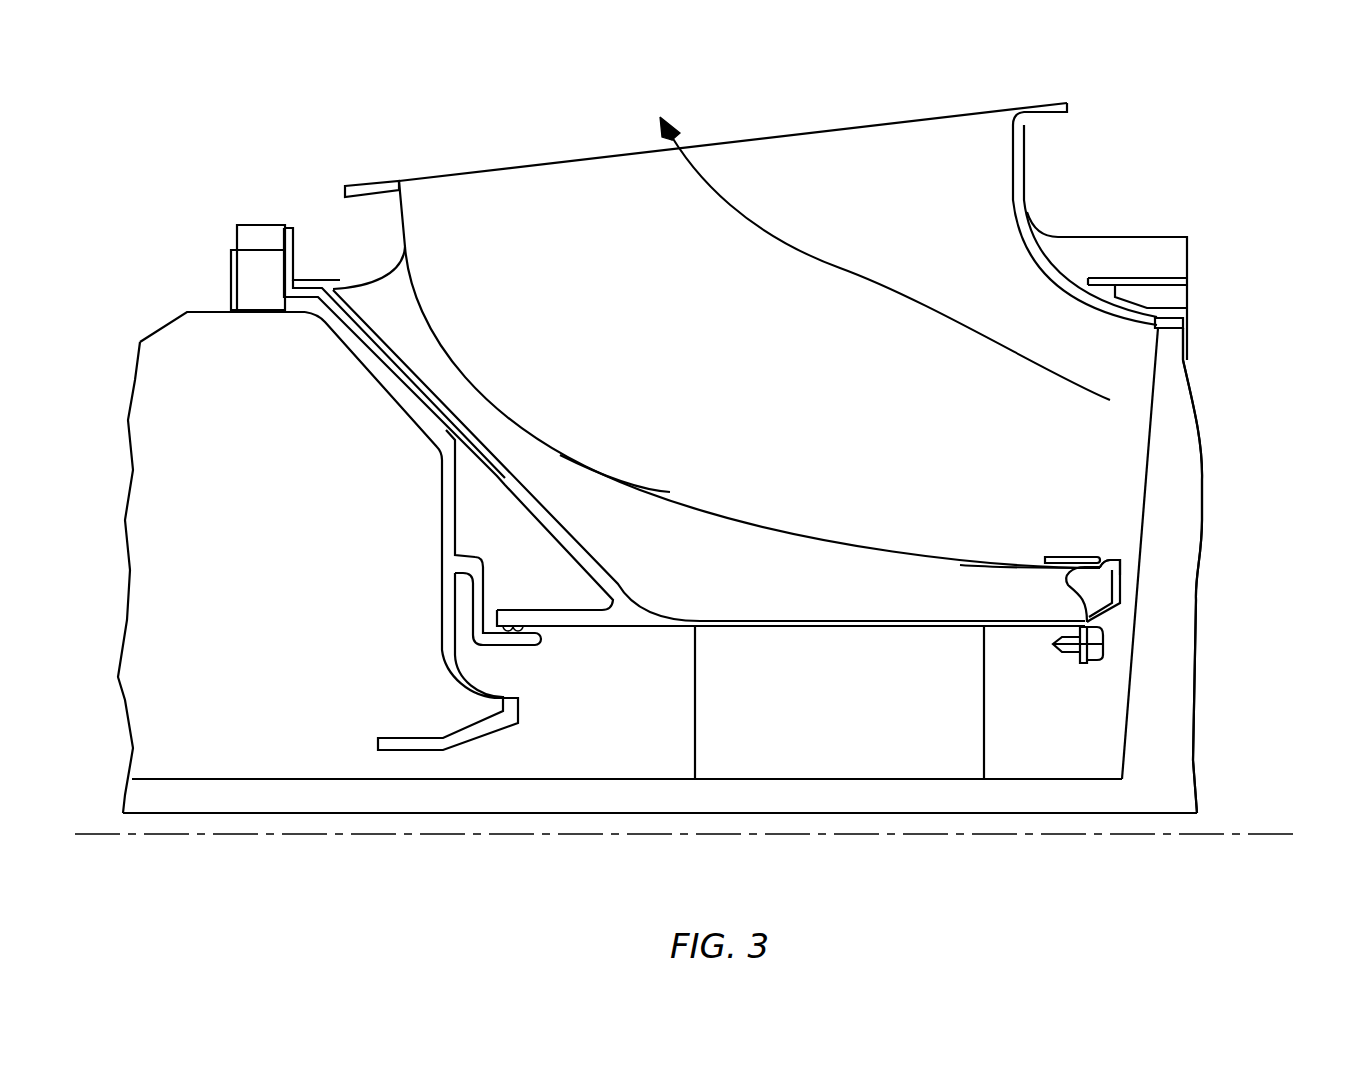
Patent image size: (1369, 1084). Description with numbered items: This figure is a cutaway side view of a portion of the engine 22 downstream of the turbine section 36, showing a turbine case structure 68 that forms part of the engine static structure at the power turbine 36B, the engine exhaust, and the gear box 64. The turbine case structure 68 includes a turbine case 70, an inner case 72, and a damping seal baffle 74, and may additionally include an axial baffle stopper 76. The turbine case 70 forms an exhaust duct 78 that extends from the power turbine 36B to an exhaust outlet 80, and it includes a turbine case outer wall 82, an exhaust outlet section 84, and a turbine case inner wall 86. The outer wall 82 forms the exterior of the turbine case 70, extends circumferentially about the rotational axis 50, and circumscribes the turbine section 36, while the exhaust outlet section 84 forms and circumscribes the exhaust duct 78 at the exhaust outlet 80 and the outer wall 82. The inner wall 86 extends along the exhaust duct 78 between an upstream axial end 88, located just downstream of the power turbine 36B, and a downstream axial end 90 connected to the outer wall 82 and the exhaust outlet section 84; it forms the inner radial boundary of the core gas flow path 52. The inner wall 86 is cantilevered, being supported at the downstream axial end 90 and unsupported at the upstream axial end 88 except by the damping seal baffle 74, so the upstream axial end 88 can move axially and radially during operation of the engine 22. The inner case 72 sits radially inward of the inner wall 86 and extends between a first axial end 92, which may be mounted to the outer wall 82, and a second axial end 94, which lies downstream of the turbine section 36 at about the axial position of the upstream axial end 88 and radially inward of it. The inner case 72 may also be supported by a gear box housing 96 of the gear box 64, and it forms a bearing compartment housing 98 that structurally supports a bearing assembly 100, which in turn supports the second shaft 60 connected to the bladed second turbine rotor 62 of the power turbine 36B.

The engine 22 is at (1182, 92).
The turbine section 36 is at (1177, 482).
The power turbine 36B is at (1192, 570).
The rotational axis 50 is at (1160, 835).
The core gas flow path 52 is at (948, 332).
The second shaft 60 is at (1025, 795).
The bladed second turbine rotor 62 is at (1168, 542).
The gear box 64 is at (354, 360).
The turbine case structure 68 is at (960, 543).
The turbine case 70 is at (1070, 209).
The inner case 72 is at (628, 613).
The damping seal baffle 74 is at (1067, 590).
The axial baffle stopper 76 is at (1122, 590).
The exhaust duct 78 is at (769, 336).
The exhaust outlet 80 is at (803, 130).
The turbine case outer wall 82 is at (343, 280).
The exhaust outlet section 84 is at (1023, 147).
The turbine case inner wall 86 is at (670, 490).
The upstream axial end 88 is at (1110, 552).
The downstream axial end 90 is at (426, 240).
The first axial end 92 is at (283, 278).
The second axial end 94 is at (1102, 662).
The gear box housing 96 is at (455, 505).
The bearing compartment housing 98 is at (855, 620).
The bearing assembly 100 is at (822, 729).